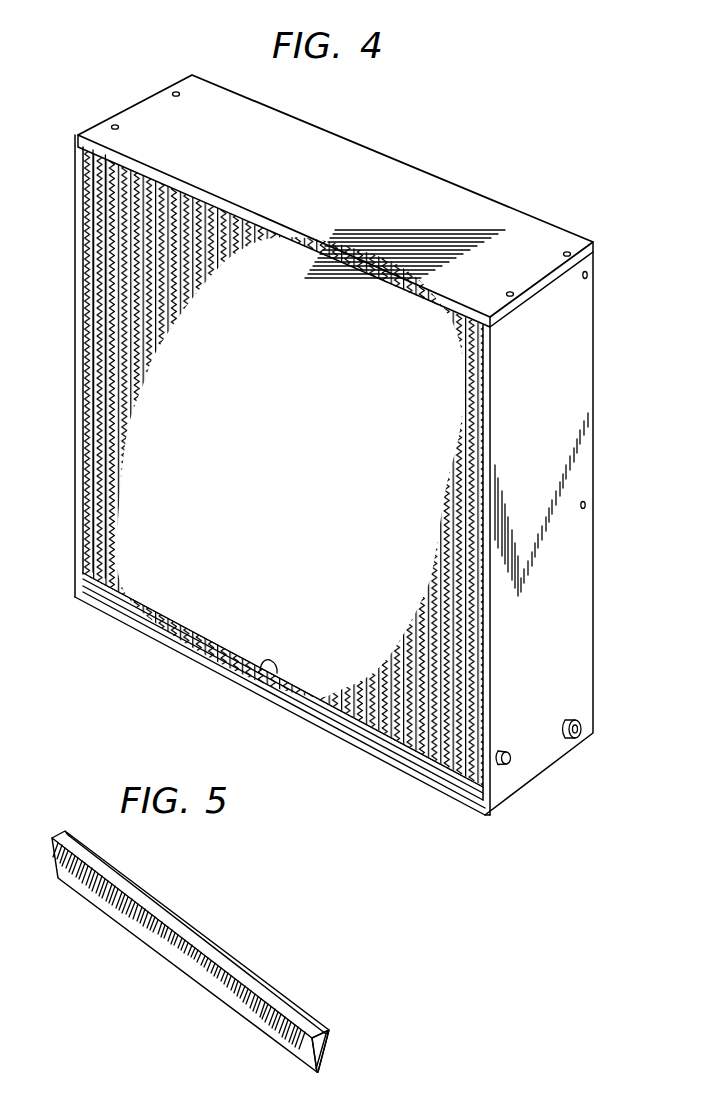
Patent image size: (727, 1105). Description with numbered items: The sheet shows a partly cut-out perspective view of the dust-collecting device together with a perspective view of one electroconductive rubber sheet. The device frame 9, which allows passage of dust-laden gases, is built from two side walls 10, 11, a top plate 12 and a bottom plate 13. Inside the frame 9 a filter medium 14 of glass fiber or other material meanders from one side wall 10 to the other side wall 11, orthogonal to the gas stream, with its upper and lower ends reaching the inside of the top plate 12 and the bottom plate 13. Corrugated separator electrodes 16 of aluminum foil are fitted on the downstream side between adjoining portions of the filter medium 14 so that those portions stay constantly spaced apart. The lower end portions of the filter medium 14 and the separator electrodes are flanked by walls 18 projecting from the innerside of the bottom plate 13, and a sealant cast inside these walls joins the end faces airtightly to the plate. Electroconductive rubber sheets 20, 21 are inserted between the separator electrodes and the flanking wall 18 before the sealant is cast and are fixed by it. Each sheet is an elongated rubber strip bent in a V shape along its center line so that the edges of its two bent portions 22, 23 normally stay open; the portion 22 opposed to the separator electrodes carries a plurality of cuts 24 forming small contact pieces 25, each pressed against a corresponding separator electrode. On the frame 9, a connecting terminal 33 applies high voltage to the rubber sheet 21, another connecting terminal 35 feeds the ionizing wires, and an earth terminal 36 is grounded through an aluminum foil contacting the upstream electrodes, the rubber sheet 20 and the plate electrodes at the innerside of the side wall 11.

In FIG. 4, the device frame 9 is at (374, 170).
In FIG. 4, the side wall 10 is at (75, 372).
In FIG. 4, the side wall 11 is at (573, 551).
In FIG. 4, the top plate 12 is at (473, 208).
In FIG. 4, the bottom plate 13 is at (315, 722).
In FIG. 4, the filter medium 14 is at (152, 340).
In FIG. 4, the separator electrode 16 is at (95, 550).
In FIG. 4, the flanking wall 18 is at (193, 643).
In FIG. 5, the electroconductive rubber sheet 20 is at (122, 931).
In FIG. 4, the electroconductive rubber sheet 21 is at (257, 667).
In FIG. 5, the bent portion 22 is at (313, 1058).
In FIG. 5, the bent portion 23 is at (332, 1043).
In FIG. 5, the cut 24 is at (270, 1027).
In FIG. 5, the contact piece 25 is at (265, 1012).
In FIG. 4, the connecting terminal 33 is at (510, 758).
In FIG. 4, the connecting terminal 35 is at (563, 740).
In FIG. 4, the earth terminal 36 is at (583, 727).